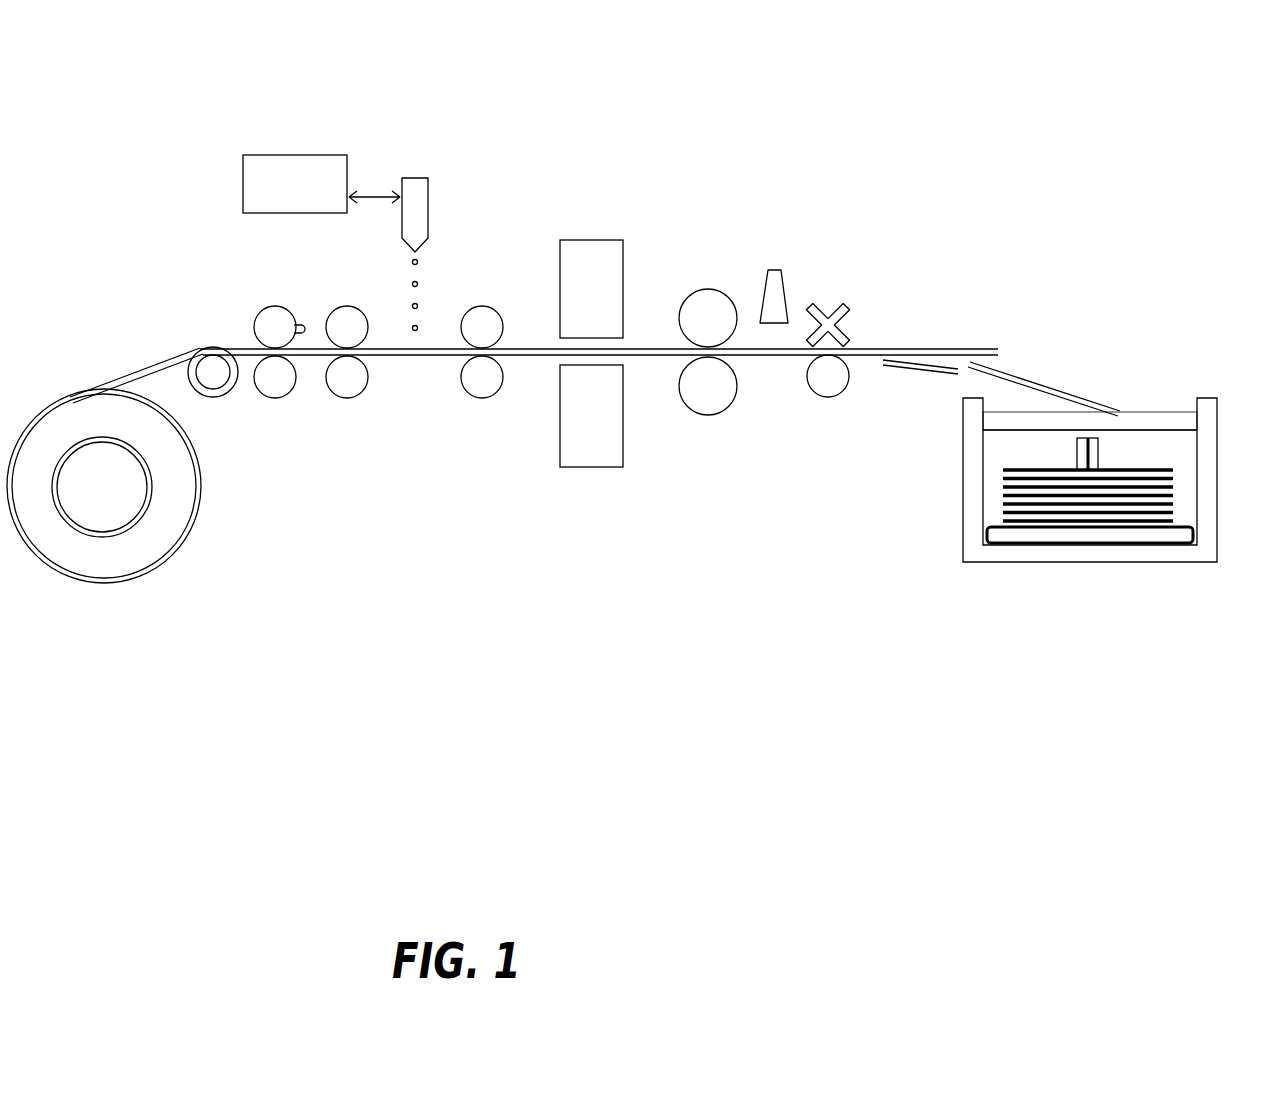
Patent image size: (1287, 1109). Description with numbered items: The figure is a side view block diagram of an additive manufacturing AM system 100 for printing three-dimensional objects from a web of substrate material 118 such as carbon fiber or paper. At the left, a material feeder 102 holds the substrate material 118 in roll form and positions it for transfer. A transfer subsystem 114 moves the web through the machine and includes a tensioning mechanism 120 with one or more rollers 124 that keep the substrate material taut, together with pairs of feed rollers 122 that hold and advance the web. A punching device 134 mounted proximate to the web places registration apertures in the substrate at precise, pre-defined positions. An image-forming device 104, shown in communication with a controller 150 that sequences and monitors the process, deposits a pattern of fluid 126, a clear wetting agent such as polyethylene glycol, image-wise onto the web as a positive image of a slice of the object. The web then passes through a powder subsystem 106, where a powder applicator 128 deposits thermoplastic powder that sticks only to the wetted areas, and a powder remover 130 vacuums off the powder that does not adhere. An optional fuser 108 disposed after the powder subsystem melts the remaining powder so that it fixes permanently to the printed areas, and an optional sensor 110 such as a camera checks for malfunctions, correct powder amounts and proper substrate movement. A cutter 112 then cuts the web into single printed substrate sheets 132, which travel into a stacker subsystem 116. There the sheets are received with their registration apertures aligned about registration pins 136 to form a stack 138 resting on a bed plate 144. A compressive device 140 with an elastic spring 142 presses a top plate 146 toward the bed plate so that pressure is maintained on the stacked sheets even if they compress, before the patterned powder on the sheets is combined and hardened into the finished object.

The AM system 100 is at (138, 148).
The material feeder 102 is at (106, 583).
The image-forming device 104 is at (414, 178).
The powder subsystem 106 is at (607, 353).
The fuser 108 is at (712, 287).
The sensor 110 is at (781, 268).
The cutter 112 is at (835, 305).
The transfer subsystem 114 is at (232, 328).
The stacker subsystem 116 is at (1059, 475).
The substrate material 118 is at (163, 358).
The tensioning mechanism 120 is at (180, 336).
The feed rollers 122 is at (342, 307).
The rollers 124 is at (217, 398).
The fluid 126 is at (435, 248).
The powder applicator 128 is at (577, 240).
The powder remover 130 is at (573, 467).
The substrate sheets 132 is at (1030, 375).
The punching device 134 is at (275, 306).
The registration pins 136 is at (1073, 462).
The stack 138 is at (995, 488).
The compressive device 140 is at (1186, 388).
The spring 142 is at (1103, 412).
The bed plate 144 is at (987, 540).
The top plate 146 is at (1150, 412).
The controller 150 is at (298, 155).